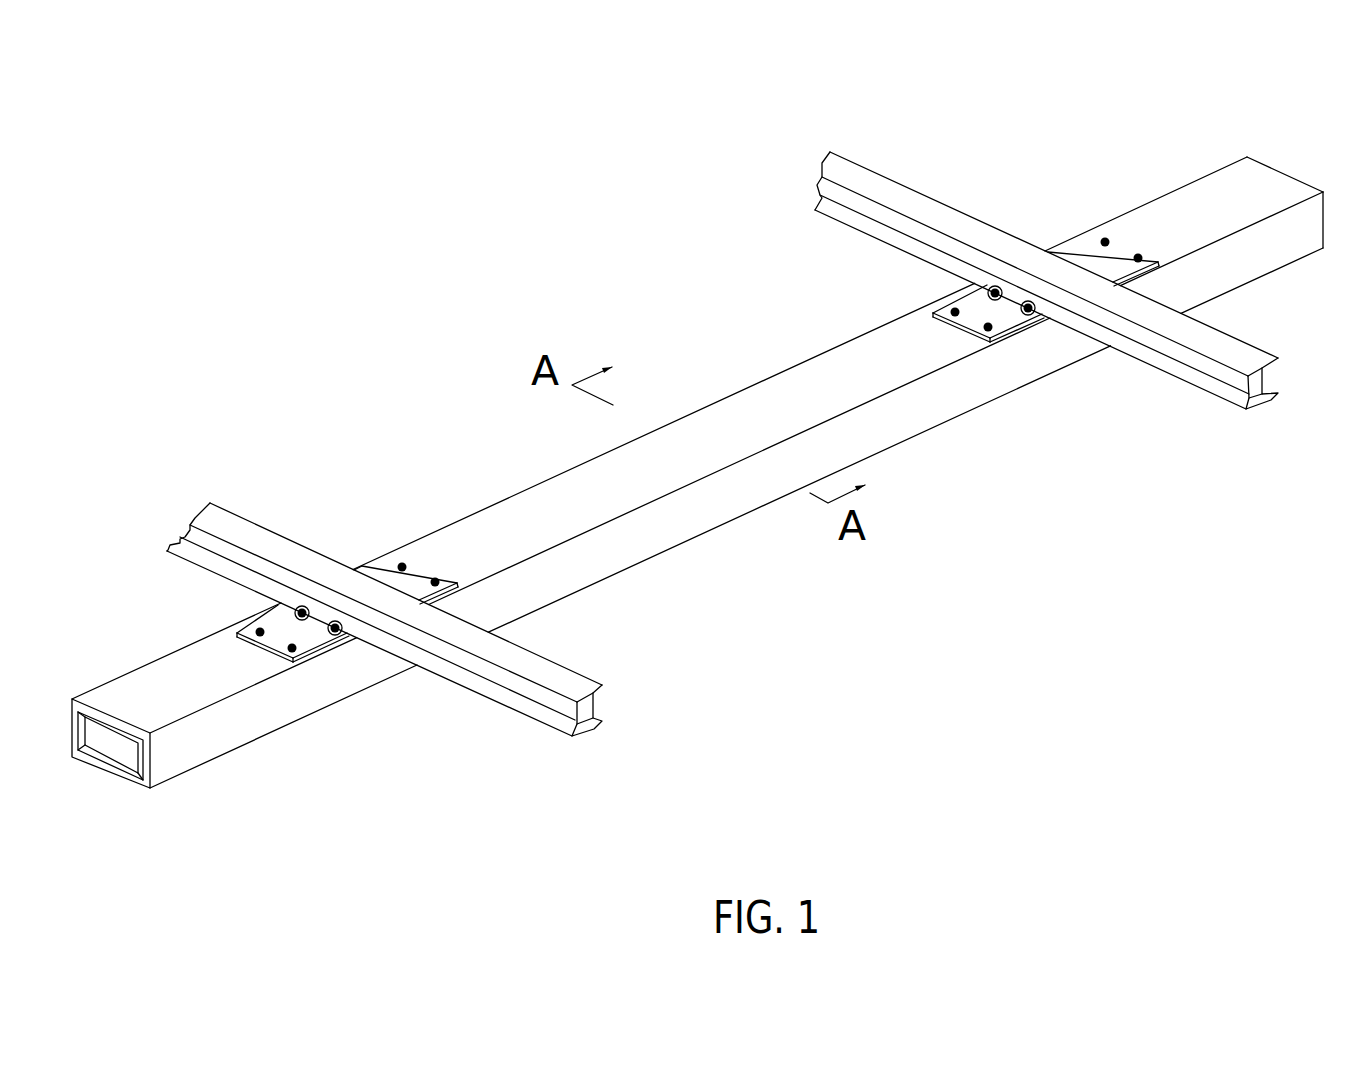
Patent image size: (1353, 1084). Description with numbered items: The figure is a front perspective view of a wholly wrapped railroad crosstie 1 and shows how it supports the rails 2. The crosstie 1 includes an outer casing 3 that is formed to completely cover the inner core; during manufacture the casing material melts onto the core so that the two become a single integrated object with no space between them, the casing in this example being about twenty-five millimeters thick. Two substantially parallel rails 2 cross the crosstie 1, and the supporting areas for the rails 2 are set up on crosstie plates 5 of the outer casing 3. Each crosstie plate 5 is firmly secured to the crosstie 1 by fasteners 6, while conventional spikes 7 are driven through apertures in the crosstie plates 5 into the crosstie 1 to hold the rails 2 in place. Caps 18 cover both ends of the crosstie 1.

The railroad crosstie 1 is at (697, 466).
The rail 2 is at (265, 527).
The outer casing 3 is at (737, 518).
The crosstie plate 5 is at (1087, 255).
The fastener 6 is at (435, 582).
The spike 7 is at (302, 613).
The cap 18 is at (163, 793).